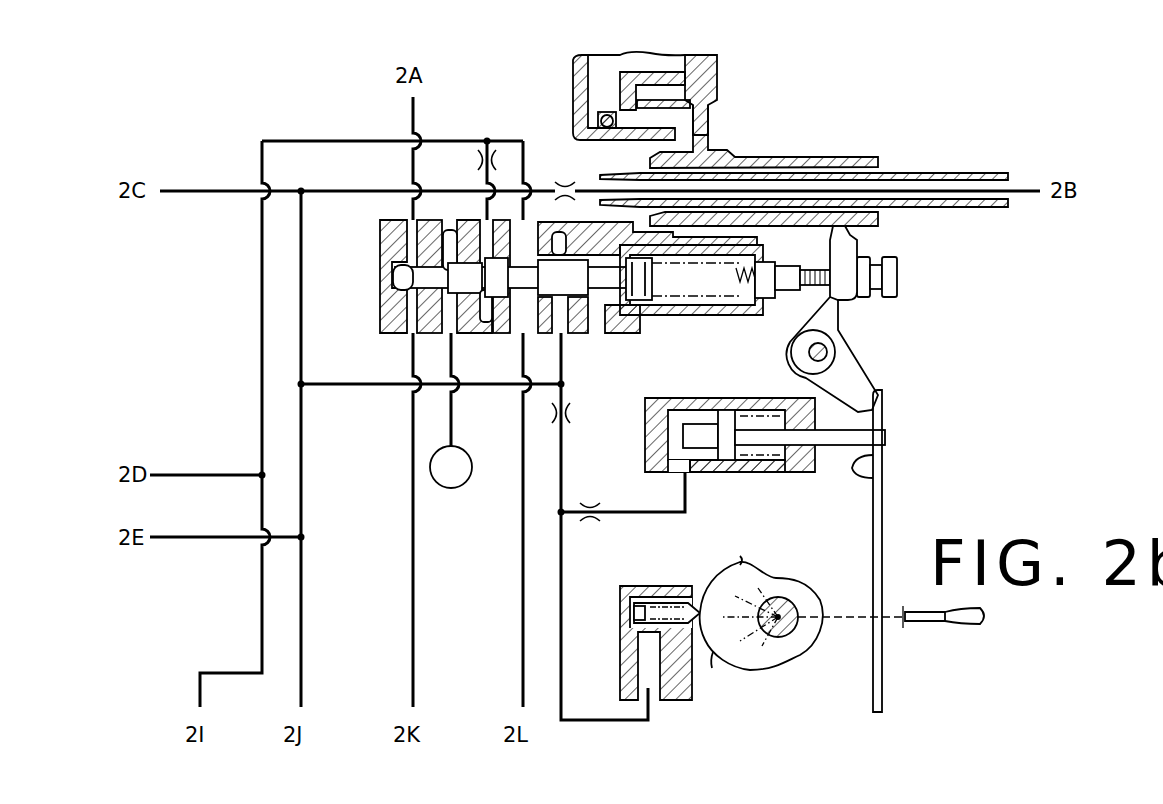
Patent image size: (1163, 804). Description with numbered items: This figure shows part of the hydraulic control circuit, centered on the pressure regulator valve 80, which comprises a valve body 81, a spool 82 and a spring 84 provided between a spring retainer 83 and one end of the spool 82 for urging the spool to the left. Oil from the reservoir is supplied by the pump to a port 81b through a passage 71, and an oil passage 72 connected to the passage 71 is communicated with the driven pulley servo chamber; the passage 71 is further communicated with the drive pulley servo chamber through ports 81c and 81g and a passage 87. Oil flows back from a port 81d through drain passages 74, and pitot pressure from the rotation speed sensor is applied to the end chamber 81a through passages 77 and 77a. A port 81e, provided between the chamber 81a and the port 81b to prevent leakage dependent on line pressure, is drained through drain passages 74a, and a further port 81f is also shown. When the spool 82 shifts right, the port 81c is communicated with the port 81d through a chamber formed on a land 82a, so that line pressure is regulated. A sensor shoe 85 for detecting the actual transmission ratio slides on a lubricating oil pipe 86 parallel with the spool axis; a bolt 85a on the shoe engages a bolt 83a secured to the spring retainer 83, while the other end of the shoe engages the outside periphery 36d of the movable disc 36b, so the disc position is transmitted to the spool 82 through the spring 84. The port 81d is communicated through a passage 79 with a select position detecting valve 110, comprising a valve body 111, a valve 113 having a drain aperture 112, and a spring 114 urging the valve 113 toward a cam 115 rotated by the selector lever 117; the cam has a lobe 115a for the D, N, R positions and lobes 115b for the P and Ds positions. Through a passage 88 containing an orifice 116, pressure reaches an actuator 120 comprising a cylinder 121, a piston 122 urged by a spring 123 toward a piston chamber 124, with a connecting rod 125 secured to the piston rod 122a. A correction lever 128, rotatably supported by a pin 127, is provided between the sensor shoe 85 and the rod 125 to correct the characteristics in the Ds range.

The movable disc 36b is at (705, 88).
The outside periphery 36d is at (708, 115).
The passage 71 is at (260, 352).
The oil passage 72 is at (210, 474).
The drain passage 74 is at (335, 395).
The drain passage 74a is at (451, 420).
The passage 77 is at (413, 118).
The passage 77a is at (412, 556).
The passage 79 is at (569, 618).
The pressure regulator valve 80 is at (644, 317).
The valve body 81 is at (682, 317).
The end chamber 81a is at (382, 268).
The port 81b is at (468, 210).
The port 81c is at (545, 208).
The port 81d is at (567, 355).
The port 81e is at (445, 333).
The valve port 81f is at (582, 332).
The port 81g is at (515, 333).
The spool 82 is at (608, 310).
The land 82a is at (576, 290).
The spring retainer 83 is at (755, 253).
The bolt 83a is at (802, 286).
The spring 84 is at (647, 270).
The sensor shoe 85 is at (807, 158).
The bolt 85a is at (897, 280).
The lubricating oil pipe 86 is at (958, 172).
The passage 87 is at (523, 556).
The passage 88 is at (657, 512).
The select position detecting valve 110 is at (721, 617).
The valve body 111 is at (622, 688).
The drain aperture 112 is at (668, 580).
The valve 113 is at (639, 598).
The spring 114 is at (628, 632).
The cam 115 is at (811, 644).
The lobe 115a is at (712, 668).
The lobes 115b is at (743, 562).
The orifice 116 is at (592, 506).
The selector lever 117 is at (924, 622).
The actuator 120 is at (801, 446).
The cylinder 121 is at (813, 458).
The piston 122 is at (726, 414).
The rod 122a is at (886, 436).
The spring 123 is at (742, 472).
The piston chamber 124 is at (693, 418).
The connecting rod 125 is at (882, 499).
The pin 127 is at (832, 354).
The correction lever 128 is at (836, 317).